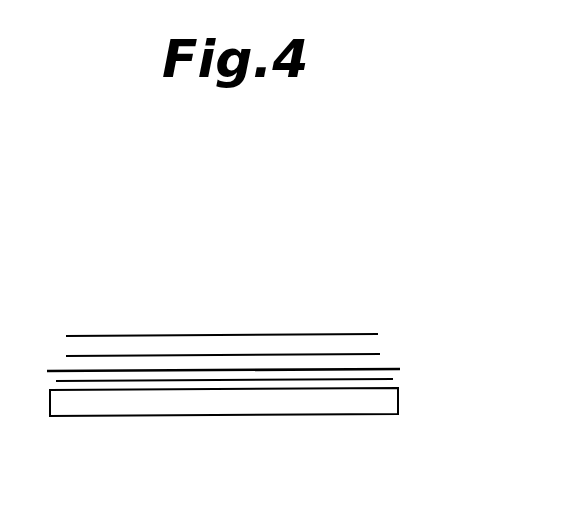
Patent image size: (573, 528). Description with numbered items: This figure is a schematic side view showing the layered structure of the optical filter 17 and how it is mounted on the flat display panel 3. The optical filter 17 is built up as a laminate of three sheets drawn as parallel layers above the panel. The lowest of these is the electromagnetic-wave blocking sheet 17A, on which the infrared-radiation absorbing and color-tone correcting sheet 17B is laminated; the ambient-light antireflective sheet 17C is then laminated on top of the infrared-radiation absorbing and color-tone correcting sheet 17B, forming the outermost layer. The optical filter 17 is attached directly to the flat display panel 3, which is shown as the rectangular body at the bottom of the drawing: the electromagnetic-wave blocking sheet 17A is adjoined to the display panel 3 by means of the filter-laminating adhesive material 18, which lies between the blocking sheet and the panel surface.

The optical filter 17 is at (212, 326).
The electromagnetic-wave blocking sheet 17A is at (270, 370).
The infrared-radiation absorbing and color-tone correcting sheet 17B is at (313, 354).
The ambient-light antireflective sheet 17C is at (374, 334).
The filter-laminating adhesive material 18 is at (331, 381).
The flat display panel 3 is at (220, 412).